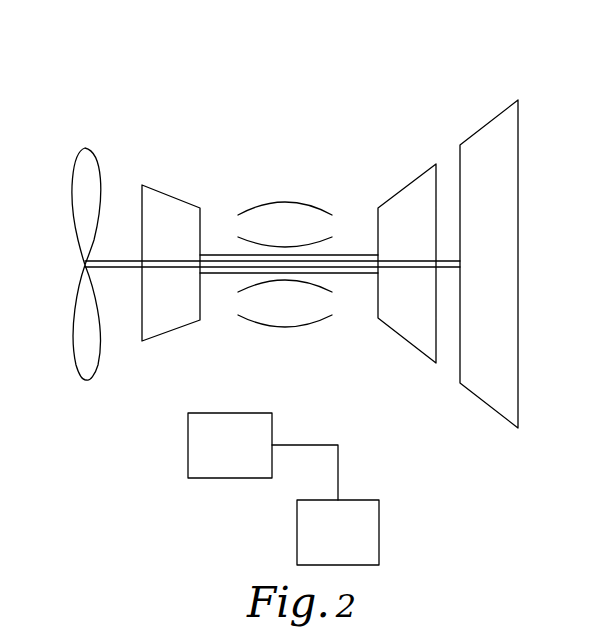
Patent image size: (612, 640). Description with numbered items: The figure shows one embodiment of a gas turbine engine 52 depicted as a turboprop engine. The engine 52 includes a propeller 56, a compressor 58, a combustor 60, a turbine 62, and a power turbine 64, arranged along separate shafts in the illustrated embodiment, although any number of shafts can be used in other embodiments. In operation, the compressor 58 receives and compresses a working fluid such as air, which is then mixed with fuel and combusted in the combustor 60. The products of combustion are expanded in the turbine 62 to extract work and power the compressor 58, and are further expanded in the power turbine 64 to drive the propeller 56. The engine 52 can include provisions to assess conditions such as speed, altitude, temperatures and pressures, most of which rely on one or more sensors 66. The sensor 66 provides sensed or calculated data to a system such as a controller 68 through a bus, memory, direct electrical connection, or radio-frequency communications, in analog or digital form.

The gas turbine engine 52 is at (331, 82).
The propeller 56 is at (98, 148).
The compressor 58 is at (165, 338).
The combustor 60 is at (310, 172).
The turbine 62 is at (405, 346).
The power turbine 64 is at (477, 132).
The sensor 66 is at (205, 480).
The controller 68 is at (380, 530).